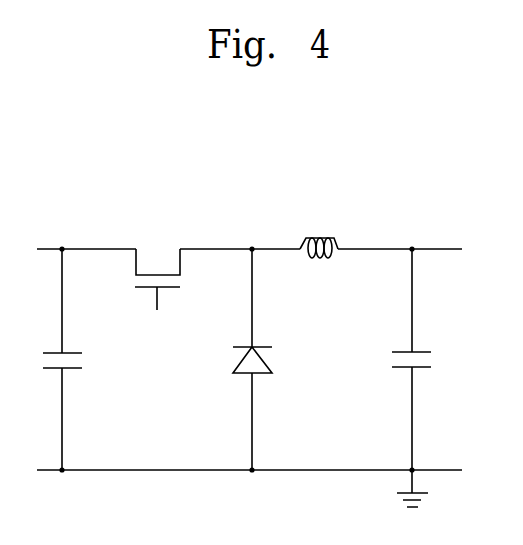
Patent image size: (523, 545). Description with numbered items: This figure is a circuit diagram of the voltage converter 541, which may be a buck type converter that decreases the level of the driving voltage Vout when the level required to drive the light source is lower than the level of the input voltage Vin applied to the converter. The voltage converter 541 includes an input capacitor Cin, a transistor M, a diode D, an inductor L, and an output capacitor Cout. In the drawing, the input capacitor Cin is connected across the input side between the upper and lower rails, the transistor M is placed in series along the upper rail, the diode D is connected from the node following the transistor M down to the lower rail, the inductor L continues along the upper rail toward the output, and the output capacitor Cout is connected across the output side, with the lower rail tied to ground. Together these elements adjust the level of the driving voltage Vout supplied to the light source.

The voltage converter 541 is at (431, 198).
The transistor M is at (157, 270).
The inductor L is at (319, 260).
The diode D is at (263, 359).
The input capacitor Cin is at (82, 359).
The output capacitor Cout is at (436, 359).